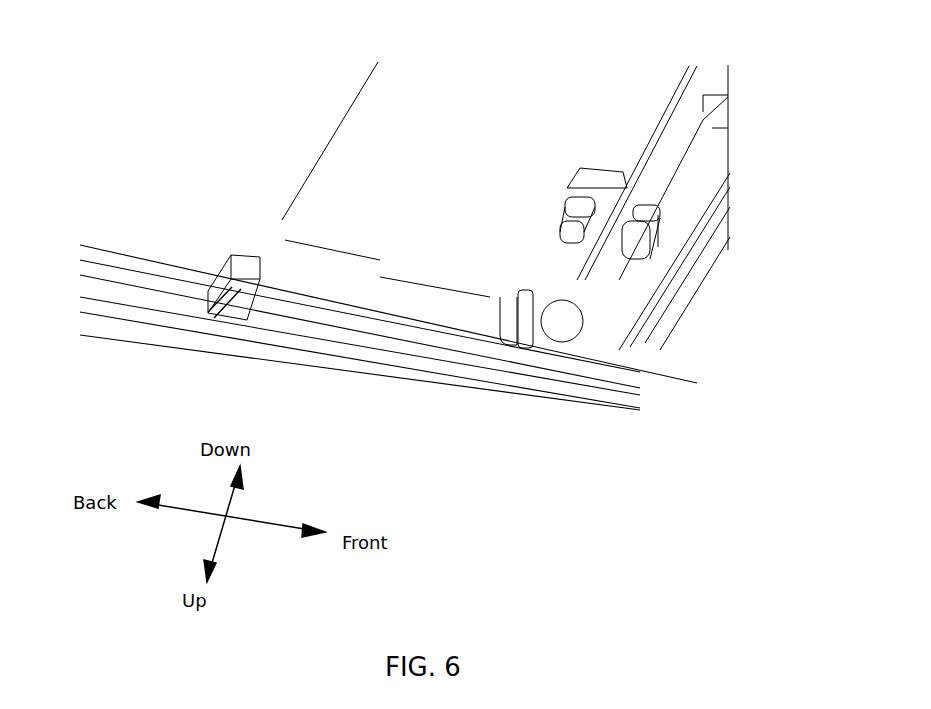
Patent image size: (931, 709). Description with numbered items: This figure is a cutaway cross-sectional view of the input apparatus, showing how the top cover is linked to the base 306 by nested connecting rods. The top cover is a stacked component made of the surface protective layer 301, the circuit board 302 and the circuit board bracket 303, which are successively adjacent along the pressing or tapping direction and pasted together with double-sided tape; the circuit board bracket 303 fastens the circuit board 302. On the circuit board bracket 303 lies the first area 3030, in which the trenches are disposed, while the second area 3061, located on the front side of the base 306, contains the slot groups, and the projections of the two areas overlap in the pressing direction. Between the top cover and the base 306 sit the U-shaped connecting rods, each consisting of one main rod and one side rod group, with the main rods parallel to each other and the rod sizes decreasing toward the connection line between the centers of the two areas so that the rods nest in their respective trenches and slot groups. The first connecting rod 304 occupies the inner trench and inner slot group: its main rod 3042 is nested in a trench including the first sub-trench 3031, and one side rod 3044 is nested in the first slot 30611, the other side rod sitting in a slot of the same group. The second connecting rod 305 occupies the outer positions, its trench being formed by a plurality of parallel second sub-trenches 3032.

The base 306 is at (257, 107).
The first sub-trench 3031 is at (532, 297).
The second area 3061 is at (600, 103).
The side rod 3044 is at (370, 299).
The main rod 3042 is at (505, 308).
The first slot 30611 is at (293, 247).
The first connecting rod 304 is at (505, 315).
The circuit board 302 is at (458, 325).
The first area 3030 is at (602, 317).
The second sub-trench 3032 is at (577, 248).
The second connecting rod 305 is at (585, 320).
The circuit board bracket 303 is at (413, 327).
The surface protective layer 301 is at (590, 392).